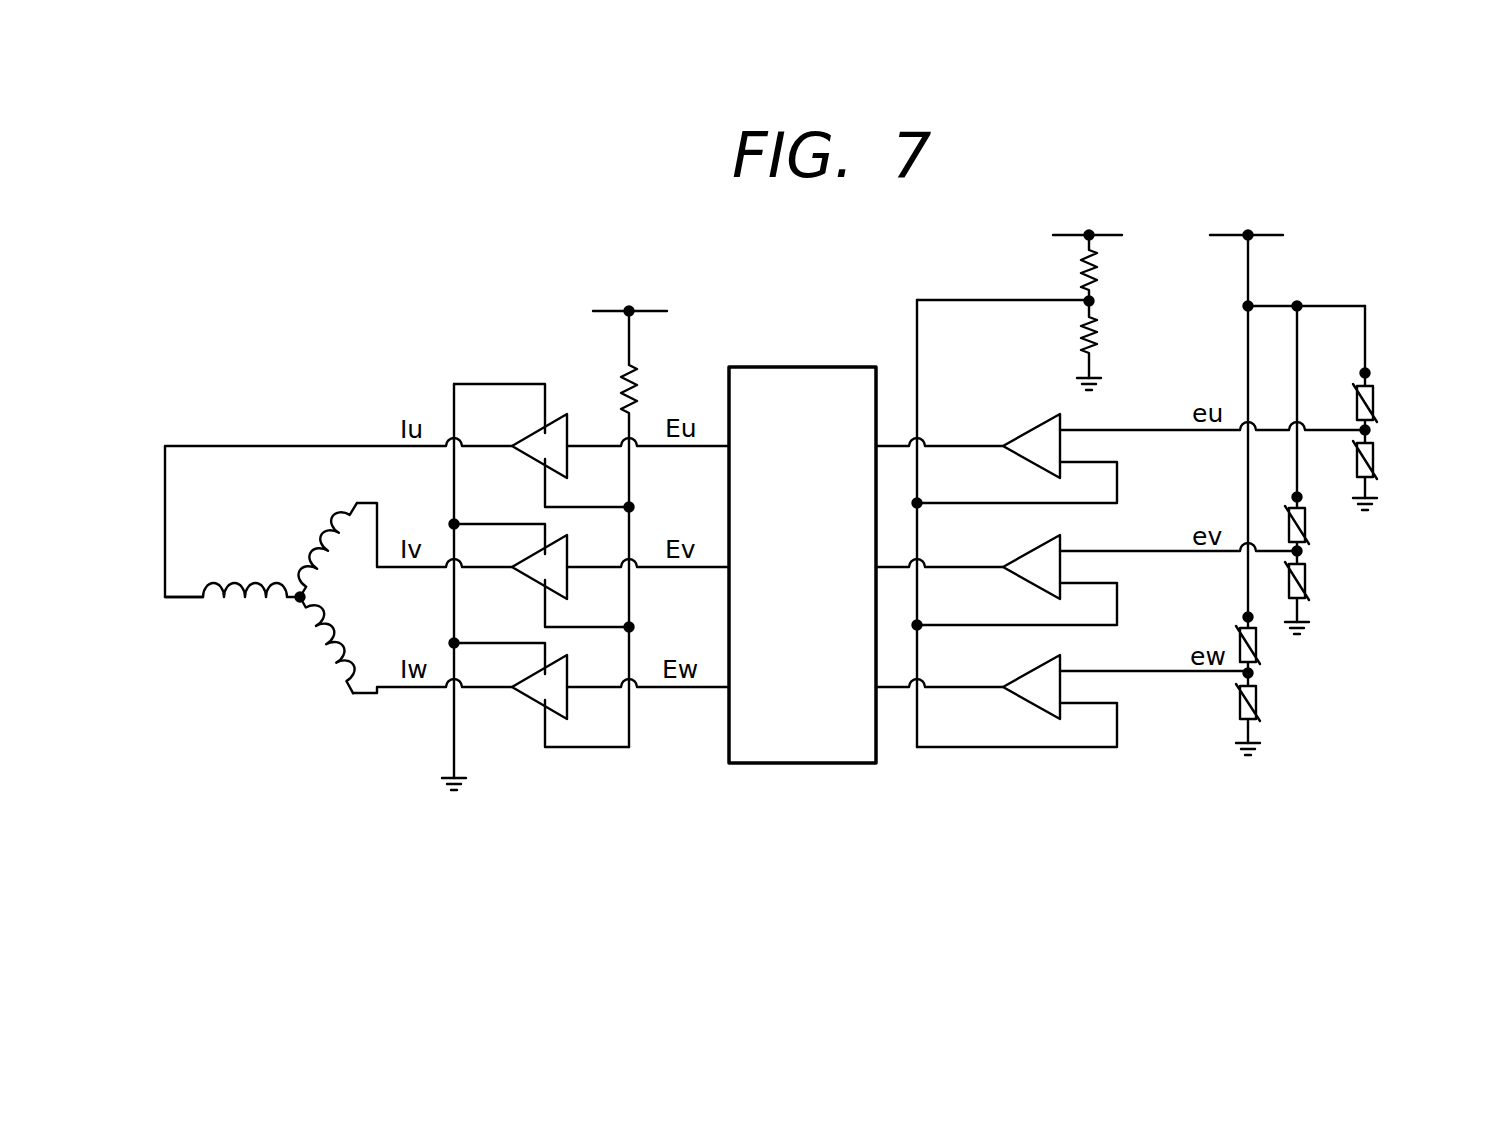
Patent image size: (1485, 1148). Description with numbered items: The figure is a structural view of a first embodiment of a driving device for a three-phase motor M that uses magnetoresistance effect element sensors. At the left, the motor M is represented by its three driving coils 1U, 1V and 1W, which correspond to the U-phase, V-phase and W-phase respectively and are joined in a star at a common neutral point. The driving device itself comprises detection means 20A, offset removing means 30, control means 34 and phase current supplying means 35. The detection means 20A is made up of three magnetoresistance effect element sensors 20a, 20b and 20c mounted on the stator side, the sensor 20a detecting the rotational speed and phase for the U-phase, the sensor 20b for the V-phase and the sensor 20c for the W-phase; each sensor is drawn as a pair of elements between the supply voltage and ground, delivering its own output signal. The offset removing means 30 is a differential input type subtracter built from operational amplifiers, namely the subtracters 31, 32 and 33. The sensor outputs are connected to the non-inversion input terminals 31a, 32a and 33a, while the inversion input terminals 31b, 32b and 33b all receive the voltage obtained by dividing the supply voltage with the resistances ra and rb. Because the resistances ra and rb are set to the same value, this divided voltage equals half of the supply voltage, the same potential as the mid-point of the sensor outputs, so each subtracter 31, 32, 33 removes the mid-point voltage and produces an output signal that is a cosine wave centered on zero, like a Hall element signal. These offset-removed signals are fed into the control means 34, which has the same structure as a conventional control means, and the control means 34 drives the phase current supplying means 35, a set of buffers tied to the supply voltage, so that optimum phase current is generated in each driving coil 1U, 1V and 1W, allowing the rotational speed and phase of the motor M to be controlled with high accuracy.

The three-phase motor M is at (338, 662).
The driving coil 1U is at (232, 612).
The driving coil 1V is at (313, 543).
The driving coil 1W is at (315, 652).
The phase current supplying means 35 is at (630, 838).
The control means 34 is at (778, 763).
The offset removing means 30 is at (1120, 554).
The subtracter 31 is at (1037, 427).
The non-inversion input terminal 31a is at (1097, 428).
The inversion input terminal 31b is at (1097, 465).
The subtracter 32 is at (1037, 547).
The non-inversion input terminal 32a is at (1097, 549).
The inversion input terminal 32b is at (1097, 586).
The subtracter 33 is at (1037, 667).
The non-inversion input terminal 33a is at (1097, 669).
The inversion input terminal 33b is at (1097, 706).
The resistance ra is at (1100, 275).
The resistance rb is at (1100, 333).
The detection means 20A is at (1343, 554).
The magnetoresistance effect element sensor 20a is at (1375, 433).
The magnetoresistance effect element sensor 20b is at (1317, 568).
The magnetoresistance effect element sensor 20c is at (1263, 702).